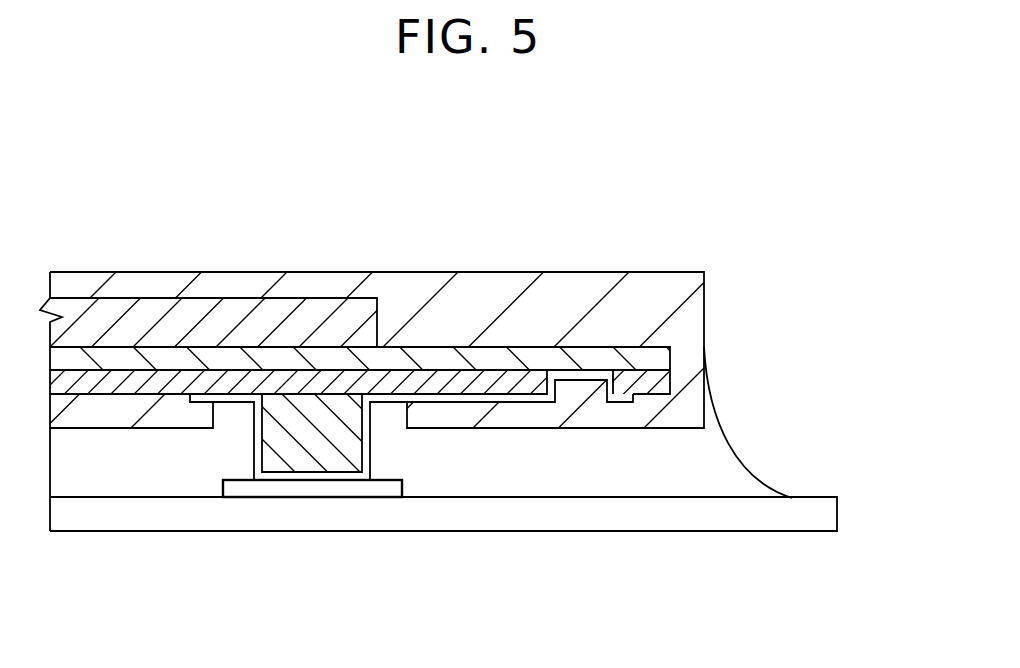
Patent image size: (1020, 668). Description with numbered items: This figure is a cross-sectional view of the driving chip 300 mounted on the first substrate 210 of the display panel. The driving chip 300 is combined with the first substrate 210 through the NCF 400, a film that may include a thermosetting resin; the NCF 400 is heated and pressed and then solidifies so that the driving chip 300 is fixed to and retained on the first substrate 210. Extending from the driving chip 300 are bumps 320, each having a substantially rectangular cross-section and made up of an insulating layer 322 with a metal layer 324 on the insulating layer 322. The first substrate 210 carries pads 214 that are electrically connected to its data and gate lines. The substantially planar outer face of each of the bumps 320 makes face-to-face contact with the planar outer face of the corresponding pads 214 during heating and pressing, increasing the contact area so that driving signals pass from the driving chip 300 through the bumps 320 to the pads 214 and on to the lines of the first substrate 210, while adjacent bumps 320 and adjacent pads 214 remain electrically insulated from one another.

The driving chip 300 is at (522, 257).
The NCF 400 is at (740, 469).
The first substrate 210 is at (828, 515).
The pads 214 is at (248, 488).
The bumps 320 is at (411, 509).
The insulating layer 322 is at (343, 463).
The metal layer 324 is at (438, 592).